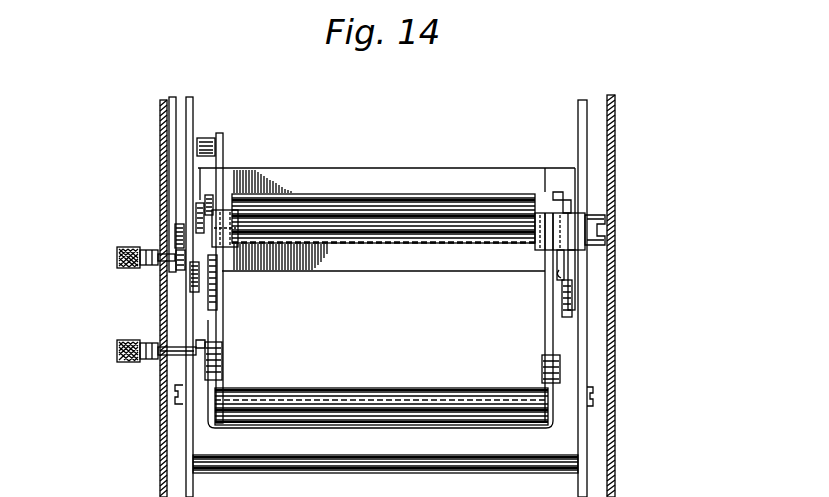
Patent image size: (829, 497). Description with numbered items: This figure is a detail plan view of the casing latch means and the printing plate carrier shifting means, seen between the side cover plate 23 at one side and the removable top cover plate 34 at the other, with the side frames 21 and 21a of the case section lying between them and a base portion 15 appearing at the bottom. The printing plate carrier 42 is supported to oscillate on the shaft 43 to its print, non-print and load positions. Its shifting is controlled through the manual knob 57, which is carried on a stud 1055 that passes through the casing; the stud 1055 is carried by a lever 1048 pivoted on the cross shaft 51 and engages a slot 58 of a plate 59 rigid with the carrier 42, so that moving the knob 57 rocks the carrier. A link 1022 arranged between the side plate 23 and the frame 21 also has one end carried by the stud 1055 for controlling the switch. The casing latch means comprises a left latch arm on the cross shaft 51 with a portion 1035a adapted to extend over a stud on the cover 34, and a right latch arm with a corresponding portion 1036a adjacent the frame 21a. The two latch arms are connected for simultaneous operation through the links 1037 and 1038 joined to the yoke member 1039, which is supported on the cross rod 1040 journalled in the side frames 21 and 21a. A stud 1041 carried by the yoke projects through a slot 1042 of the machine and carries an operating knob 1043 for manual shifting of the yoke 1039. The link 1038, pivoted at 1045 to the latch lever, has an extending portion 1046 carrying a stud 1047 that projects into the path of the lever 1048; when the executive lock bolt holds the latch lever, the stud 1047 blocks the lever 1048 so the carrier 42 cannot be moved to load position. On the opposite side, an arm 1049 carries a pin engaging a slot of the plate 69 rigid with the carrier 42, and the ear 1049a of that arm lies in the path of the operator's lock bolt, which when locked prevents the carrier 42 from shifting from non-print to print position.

The side cover plate 23 is at (160, 110).
The top cover plate 34 is at (633, 296).
The link 1022 is at (169, 138).
The side frame 21 is at (186, 414).
The side frame 21a is at (587, 420).
The stud 1047 is at (205, 138).
The extending portion 1046 is at (223, 158).
The pivot 1045 is at (250, 180).
The printing plate carrier 42 is at (485, 168).
The shaft 43 is at (398, 192).
The cross shaft 51 is at (433, 250).
The lever 1048 is at (205, 198).
The portion of latch member 1035a is at (200, 212).
The slot 58 is at (175, 232).
The knob 57 is at (117, 256).
The stud 1055 is at (178, 268).
The plate 59 is at (198, 300).
The link 1037 is at (226, 322).
The operating knob 1043 is at (117, 346).
The slot 1042 is at (160, 366).
The stud 1041 is at (160, 388).
The base 15 is at (114, 494).
The cross rod 1040 is at (455, 378).
The yoke member 1039 is at (385, 425).
The portion of latch arm 1036a is at (570, 273).
The arm 1049 is at (577, 213).
The plate 69 is at (577, 262).
The ear 1049a is at (566, 302).
The link 1038 is at (555, 328).